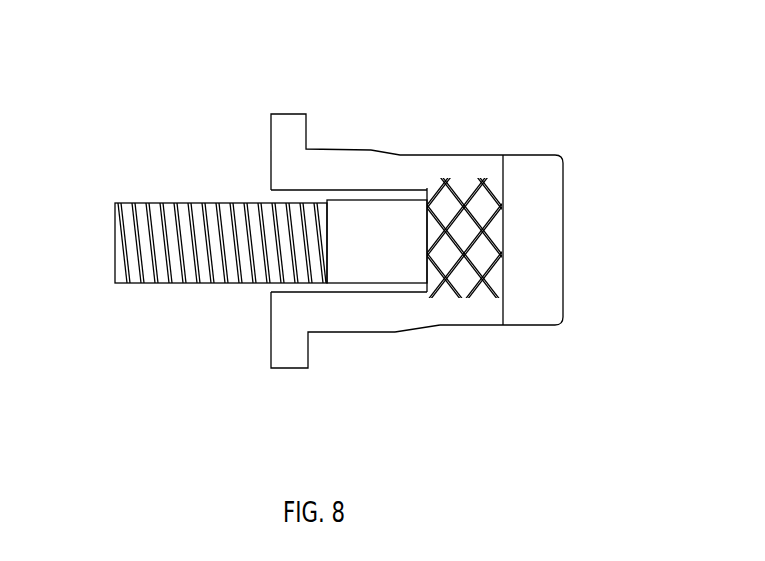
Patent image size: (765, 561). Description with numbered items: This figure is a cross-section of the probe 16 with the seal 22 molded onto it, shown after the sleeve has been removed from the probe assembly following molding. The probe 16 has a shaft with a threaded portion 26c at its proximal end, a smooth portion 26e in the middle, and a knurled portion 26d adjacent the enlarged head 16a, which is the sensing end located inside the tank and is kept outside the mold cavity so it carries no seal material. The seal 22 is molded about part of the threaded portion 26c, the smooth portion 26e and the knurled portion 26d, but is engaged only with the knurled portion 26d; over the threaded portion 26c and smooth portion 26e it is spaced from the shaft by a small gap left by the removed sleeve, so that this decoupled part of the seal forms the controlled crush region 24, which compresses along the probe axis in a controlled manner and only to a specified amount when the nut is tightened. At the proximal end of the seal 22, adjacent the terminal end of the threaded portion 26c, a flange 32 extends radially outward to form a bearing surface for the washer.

The probe 16 is at (573, 213).
The enlarged head 16a is at (543, 296).
The seal 22 is at (366, 166).
The controlled crush region 24 is at (405, 172).
The threaded portion 26c is at (268, 292).
The knurled portion 26d is at (462, 282).
The smooth portion 26e is at (368, 262).
The flange 32 is at (273, 132).